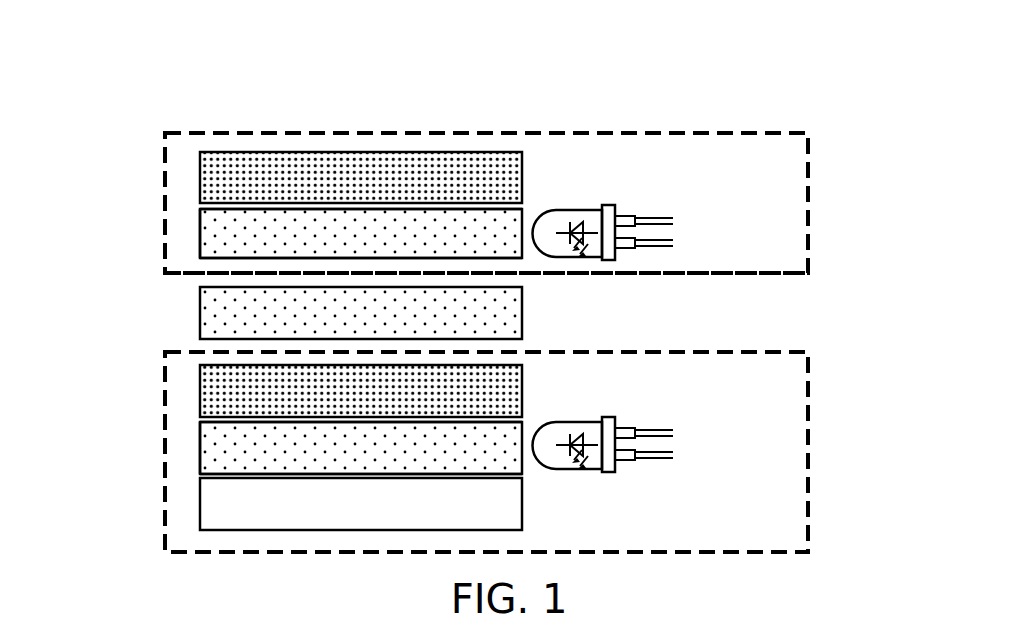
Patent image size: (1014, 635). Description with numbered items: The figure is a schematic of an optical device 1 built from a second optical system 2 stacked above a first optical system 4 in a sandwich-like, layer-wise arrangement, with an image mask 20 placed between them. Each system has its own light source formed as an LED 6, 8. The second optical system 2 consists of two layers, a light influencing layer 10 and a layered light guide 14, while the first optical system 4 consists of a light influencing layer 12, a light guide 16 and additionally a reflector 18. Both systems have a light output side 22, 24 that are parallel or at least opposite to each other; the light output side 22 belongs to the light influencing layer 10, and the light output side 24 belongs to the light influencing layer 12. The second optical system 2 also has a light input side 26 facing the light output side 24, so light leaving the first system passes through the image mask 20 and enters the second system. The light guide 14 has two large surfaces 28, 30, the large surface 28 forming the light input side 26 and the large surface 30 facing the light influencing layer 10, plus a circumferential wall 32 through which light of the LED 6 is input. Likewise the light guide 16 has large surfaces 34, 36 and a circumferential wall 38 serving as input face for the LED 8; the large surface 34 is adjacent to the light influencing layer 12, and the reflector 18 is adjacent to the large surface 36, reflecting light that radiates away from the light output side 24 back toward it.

The optical device 1 is at (106, 170).
The second optical system 2 is at (804, 185).
The first optical system 4 is at (804, 441).
The LED 6 is at (594, 213).
The LED 8 is at (594, 425).
The light influencing layer 10 is at (243, 152).
The light influencing layer 12 is at (199, 386).
The light guide 14 is at (199, 228).
The light guide 16 is at (199, 441).
The reflector 18 is at (522, 524).
The image mask 20 is at (522, 298).
The light output side 22 is at (682, 122).
The light output side 24 is at (645, 341).
The light input side 26 is at (743, 287).
The large surface 28 is at (205, 273).
The large surface 30 is at (530, 204).
The circumferential wall 32 is at (188, 242).
The large surface 34 is at (530, 415).
The large surface 36 is at (530, 483).
The circumferential wall 38 is at (188, 452).